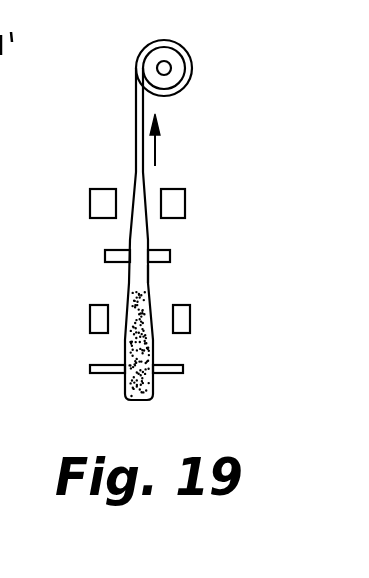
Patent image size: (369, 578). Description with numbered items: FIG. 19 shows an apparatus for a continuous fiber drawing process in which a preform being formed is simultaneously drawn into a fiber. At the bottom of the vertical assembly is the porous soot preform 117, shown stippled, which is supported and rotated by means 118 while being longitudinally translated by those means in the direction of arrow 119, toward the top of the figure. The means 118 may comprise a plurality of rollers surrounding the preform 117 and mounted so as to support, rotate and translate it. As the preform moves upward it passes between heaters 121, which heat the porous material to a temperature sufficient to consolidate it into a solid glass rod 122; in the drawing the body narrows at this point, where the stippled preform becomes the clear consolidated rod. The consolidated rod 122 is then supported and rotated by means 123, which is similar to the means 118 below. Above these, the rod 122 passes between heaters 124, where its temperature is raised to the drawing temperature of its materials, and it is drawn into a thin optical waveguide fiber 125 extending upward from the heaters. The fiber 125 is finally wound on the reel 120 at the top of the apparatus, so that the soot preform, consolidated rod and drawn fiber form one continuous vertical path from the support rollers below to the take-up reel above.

The soot preform 117 is at (148, 388).
The support, rotate and translate means 118 is at (206, 369).
The arrow indicating translation direction 119 is at (157, 151).
The reel 120 is at (172, 68).
The heaters 121 is at (212, 318).
The solid glass rod 122 is at (146, 270).
The support and rotate means for consolidated rod 123 is at (198, 254).
The heaters 124 is at (200, 203).
The optical waveguide fiber 125 is at (136, 121).